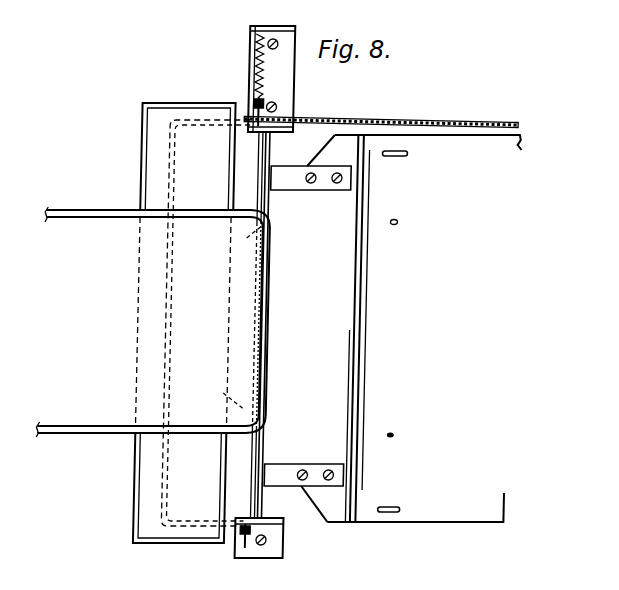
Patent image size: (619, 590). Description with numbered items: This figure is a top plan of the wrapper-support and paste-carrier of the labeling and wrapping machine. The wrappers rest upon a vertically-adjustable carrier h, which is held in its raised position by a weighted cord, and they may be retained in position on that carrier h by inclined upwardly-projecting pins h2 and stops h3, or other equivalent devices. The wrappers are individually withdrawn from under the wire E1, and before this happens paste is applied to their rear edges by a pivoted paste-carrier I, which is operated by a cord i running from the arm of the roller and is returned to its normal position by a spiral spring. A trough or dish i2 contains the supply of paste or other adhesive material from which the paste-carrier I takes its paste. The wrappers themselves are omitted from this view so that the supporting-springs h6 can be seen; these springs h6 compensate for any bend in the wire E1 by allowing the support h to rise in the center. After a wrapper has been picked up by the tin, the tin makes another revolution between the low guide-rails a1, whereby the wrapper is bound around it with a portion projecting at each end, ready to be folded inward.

The trough or dish i2 is at (214, 292).
The cord i is at (395, 118).
The carrier h is at (424, 328).
The inclined upwardly-projecting pins h2 is at (400, 222).
The stops h3 is at (400, 156).
The supporting-springs h6 is at (292, 190).
The wire E1 is at (270, 153).
The paste-carrier I is at (258, 158).
The low guide-rails a1 is at (105, 215).